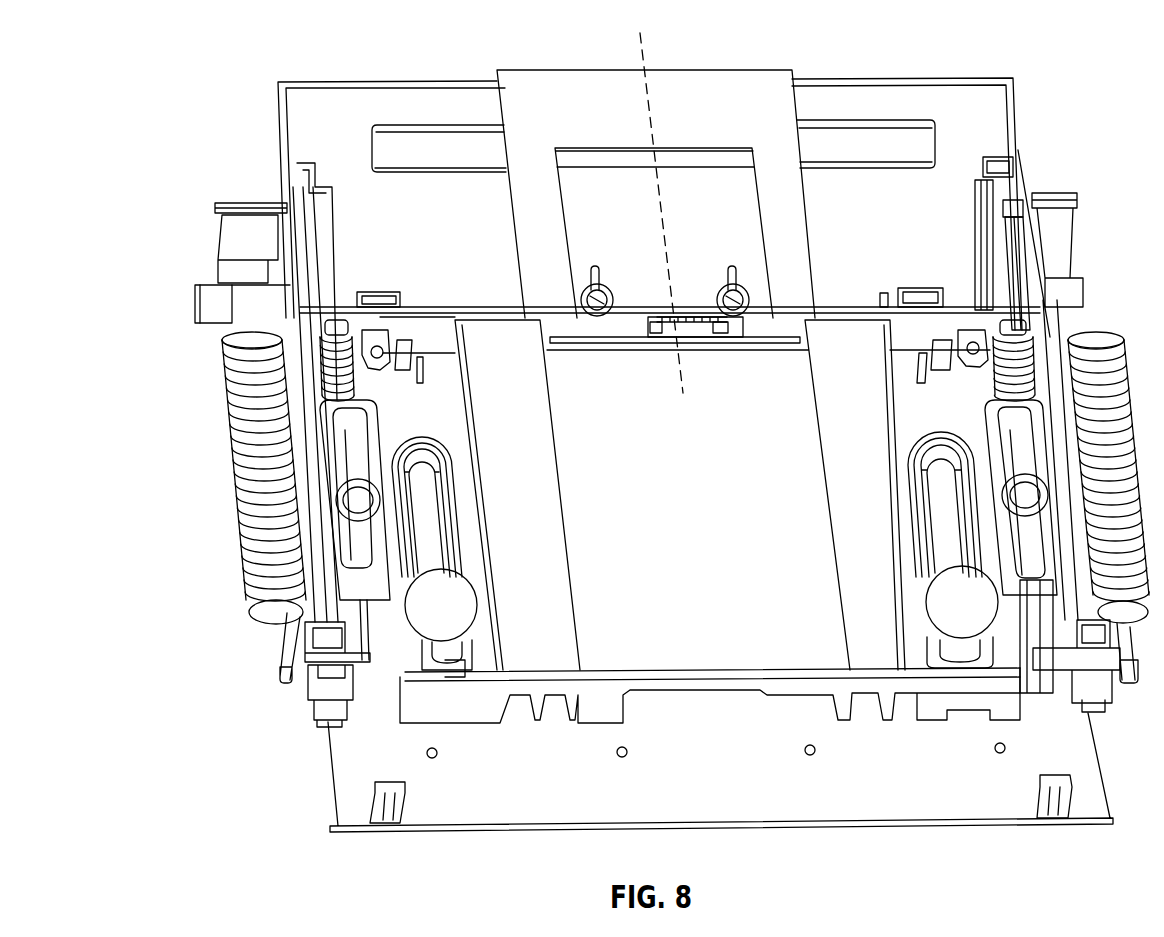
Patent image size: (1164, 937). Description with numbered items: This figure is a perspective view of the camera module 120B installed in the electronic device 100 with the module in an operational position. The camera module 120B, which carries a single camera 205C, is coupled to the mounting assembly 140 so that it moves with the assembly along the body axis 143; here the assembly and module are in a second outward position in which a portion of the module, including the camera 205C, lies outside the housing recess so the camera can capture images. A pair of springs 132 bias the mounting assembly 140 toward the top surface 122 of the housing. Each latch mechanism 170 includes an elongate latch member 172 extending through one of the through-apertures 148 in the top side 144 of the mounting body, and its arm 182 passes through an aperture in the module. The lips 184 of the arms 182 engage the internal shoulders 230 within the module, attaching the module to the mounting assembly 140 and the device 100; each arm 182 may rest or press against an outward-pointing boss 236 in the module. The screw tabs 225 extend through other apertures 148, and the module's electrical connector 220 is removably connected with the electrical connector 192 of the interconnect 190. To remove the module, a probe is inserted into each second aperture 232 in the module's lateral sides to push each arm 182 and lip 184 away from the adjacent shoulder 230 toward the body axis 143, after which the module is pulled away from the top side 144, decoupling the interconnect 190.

The electronic device 100 is at (232, 195).
The camera module 120B is at (278, 117).
The top surface 122 is at (265, 190).
The camera 205C is at (430, 147).
The body axis 143 is at (642, 57).
The boss 236 is at (343, 278).
The screw tabs 225 is at (388, 297).
The through-apertures 148 is at (365, 337).
The top side 144 is at (510, 318).
The electrical connector 220 is at (680, 317).
The electrical connector 192 is at (647, 333).
The interconnect 190 is at (725, 347).
The lip 184 is at (1002, 197).
The second apertures 232 is at (1020, 197).
The internal shoulders 230 is at (1033, 195).
The arm 182 is at (1000, 237).
The springs 132 is at (237, 397).
The latch mechanism 170 is at (327, 412).
The latch member 172 is at (332, 447).
The mounting assembly 140 is at (507, 803).